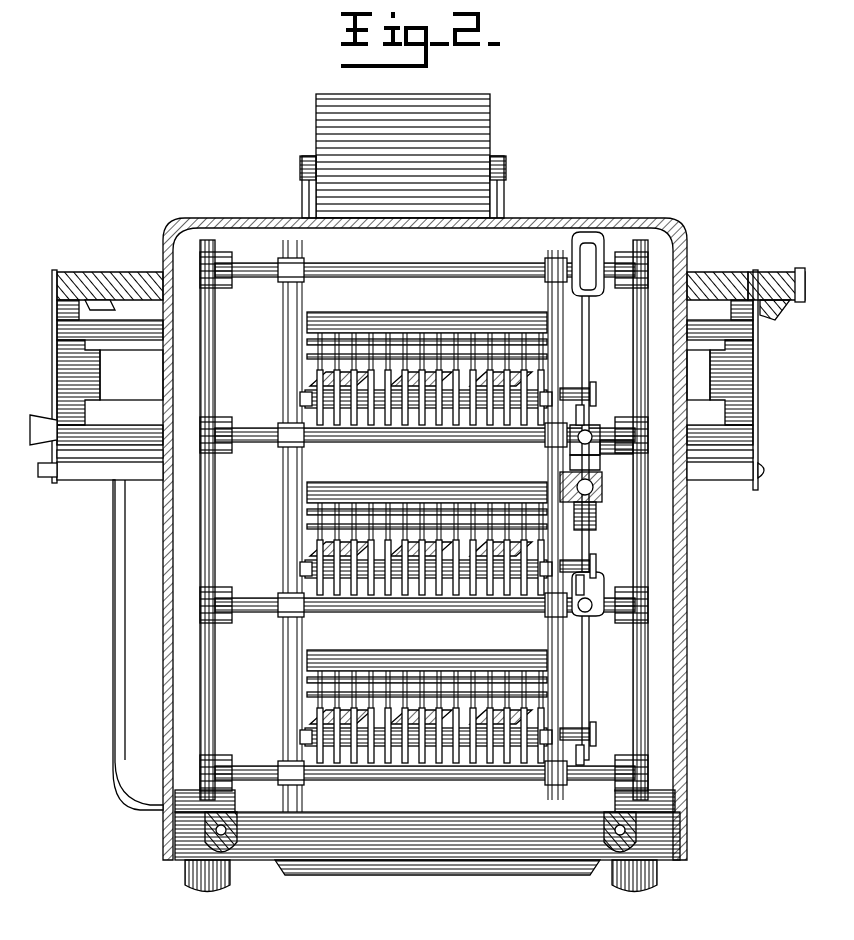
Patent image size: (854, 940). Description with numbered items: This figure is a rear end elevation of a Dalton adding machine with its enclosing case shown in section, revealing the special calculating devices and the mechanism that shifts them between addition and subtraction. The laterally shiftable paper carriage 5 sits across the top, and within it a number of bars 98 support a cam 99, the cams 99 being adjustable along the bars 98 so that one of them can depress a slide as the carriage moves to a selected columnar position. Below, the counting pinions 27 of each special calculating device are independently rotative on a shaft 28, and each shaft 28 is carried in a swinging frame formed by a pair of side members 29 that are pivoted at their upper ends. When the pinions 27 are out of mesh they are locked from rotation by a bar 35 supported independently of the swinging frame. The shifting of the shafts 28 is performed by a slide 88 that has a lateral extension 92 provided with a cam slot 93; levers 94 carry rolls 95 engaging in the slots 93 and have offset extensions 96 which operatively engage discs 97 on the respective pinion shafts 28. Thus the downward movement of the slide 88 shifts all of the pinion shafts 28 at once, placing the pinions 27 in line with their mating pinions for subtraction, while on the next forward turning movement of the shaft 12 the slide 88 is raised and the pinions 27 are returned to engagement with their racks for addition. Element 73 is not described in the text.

The laterally shiftable carriage 5 is at (90, 395).
The shaft 12 is at (140, 800).
The counting pinions 27 is at (456, 425).
The shaft 28 is at (584, 418).
The side members 29 is at (564, 372).
The bar 35 is at (330, 548).
The guide rods 73 is at (435, 335).
The slide 88 is at (554, 340).
The lateral extension 92 is at (588, 250).
The cam slot 93 is at (588, 282).
The levers 94 is at (605, 456).
The rolls 95 is at (592, 440).
The offset extensions 96 is at (590, 520).
The discs 97 is at (592, 394).
The bars 98 is at (702, 292).
The cam 99 is at (115, 295).